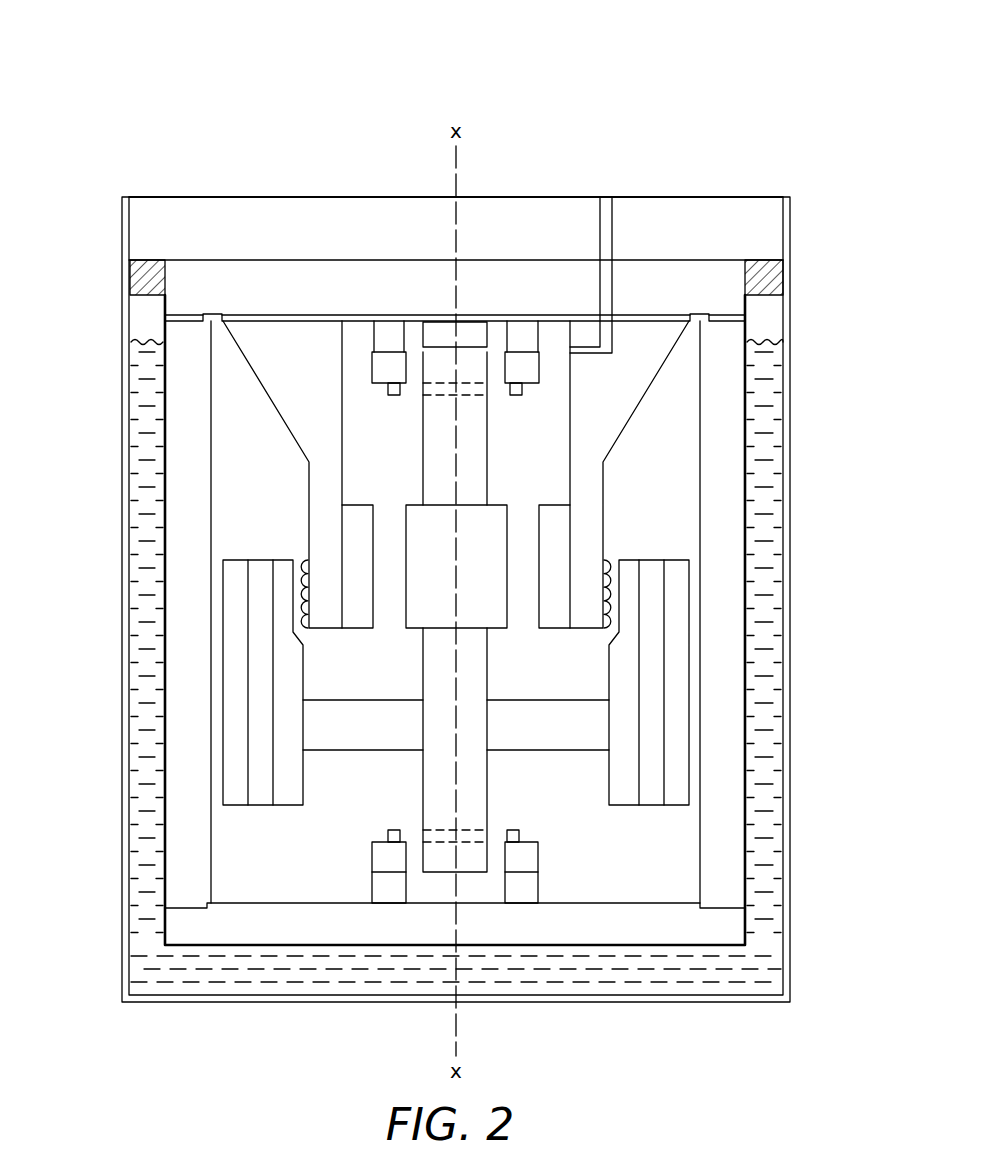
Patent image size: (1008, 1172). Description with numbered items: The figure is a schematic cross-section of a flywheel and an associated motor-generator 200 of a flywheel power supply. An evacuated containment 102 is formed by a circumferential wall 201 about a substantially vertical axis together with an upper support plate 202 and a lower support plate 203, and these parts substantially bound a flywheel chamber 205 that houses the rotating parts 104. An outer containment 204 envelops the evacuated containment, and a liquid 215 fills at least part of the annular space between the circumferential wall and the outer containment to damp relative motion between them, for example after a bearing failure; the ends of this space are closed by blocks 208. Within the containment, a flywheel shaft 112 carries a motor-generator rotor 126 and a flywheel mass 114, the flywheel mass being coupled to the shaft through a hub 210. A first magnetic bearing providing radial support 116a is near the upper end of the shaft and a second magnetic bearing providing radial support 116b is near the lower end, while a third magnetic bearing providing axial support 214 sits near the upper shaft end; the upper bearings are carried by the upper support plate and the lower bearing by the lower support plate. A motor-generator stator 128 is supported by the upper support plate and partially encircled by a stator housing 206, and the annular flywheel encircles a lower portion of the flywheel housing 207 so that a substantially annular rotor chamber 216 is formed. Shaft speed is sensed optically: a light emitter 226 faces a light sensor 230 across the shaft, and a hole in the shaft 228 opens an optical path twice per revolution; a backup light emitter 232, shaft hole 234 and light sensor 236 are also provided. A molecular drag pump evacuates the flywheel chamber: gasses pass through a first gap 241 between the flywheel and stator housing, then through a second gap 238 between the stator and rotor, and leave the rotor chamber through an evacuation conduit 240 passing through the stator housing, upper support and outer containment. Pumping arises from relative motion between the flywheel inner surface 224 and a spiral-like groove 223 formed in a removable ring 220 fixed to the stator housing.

The flywheel and associated motor-generator 200 is at (348, 150).
The upper support plate 202 is at (224, 272).
The outer containment 204 is at (788, 512).
The seal block 208 is at (783, 274).
The circumferential wall 201 is at (752, 472).
The liquid 215 is at (762, 340).
The evacuated containment 102 is at (746, 407).
The stator housing 206 is at (291, 338).
The lower support plate 203 is at (648, 933).
The rotor chamber 216 is at (392, 432).
The second gap 238 is at (388, 613).
The motor-generator stator 128 is at (572, 522).
The motor-generator rotor 126 is at (505, 610).
The flywheel shaft 112 is at (472, 460).
The hole in the shaft 228 is at (470, 392).
The backup shaft hole 234 is at (466, 830).
The third magnetic bearing providing axial support 214 is at (481, 328).
The first magnetic bearing providing radial support 116a is at (395, 350).
The second magnetic bearing providing radial support 116b is at (525, 874).
The light sensor 230 is at (392, 396).
The light emitter 226 is at (520, 396).
The backup light sensor 236 is at (392, 833).
The backup light emitter 232 is at (520, 830).
The evacuation conduit 240 is at (609, 232).
The first gap 241 is at (609, 196).
The hub 210 is at (333, 717).
The flywheel mass 114 is at (230, 677).
The flywheel housing 207 is at (622, 577).
The removable ring 220 is at (306, 563).
The flywheel inner surface 224 is at (607, 572).
The spiral-like groove 223 is at (296, 600).
The flywheel chamber 205 is at (243, 858).
The rotating parts 104 is at (335, 790).